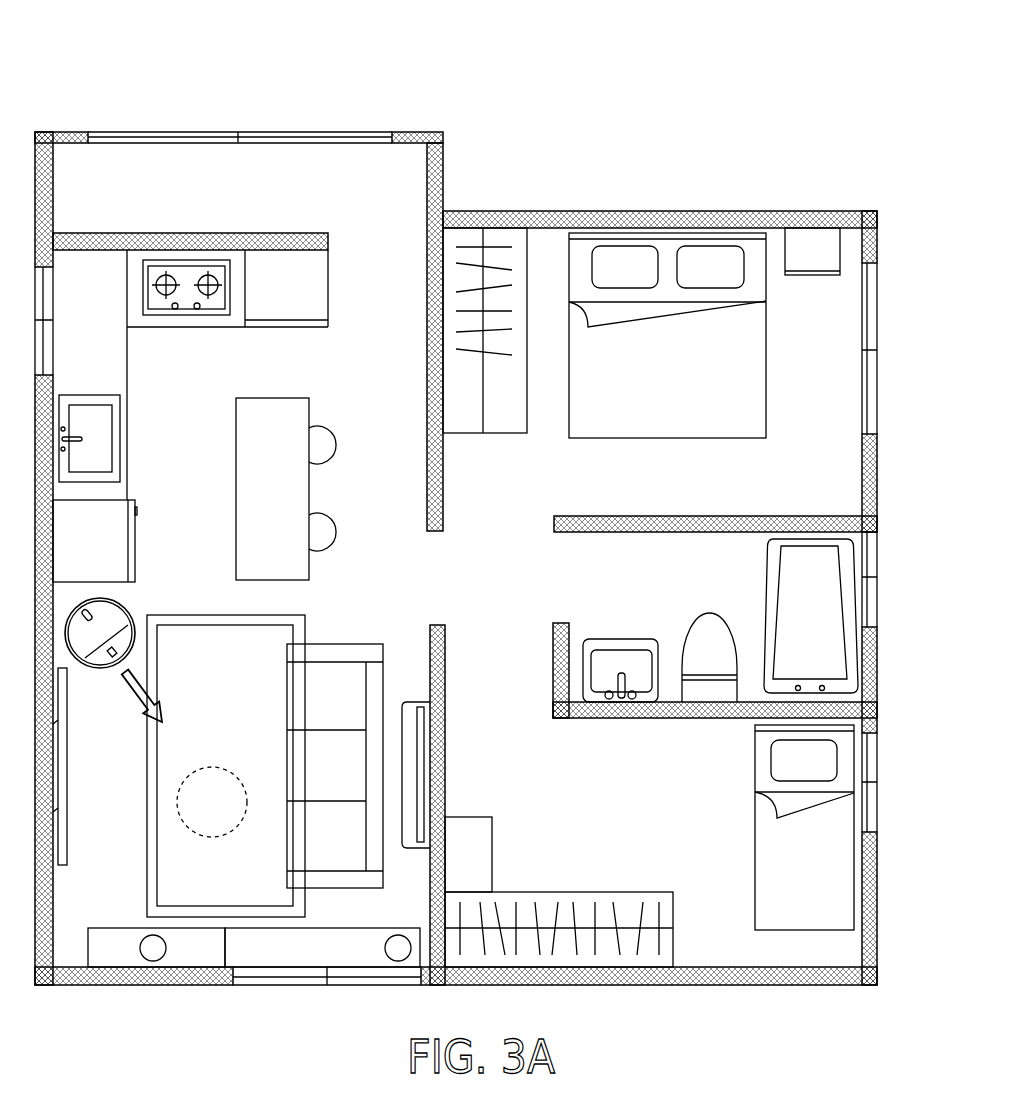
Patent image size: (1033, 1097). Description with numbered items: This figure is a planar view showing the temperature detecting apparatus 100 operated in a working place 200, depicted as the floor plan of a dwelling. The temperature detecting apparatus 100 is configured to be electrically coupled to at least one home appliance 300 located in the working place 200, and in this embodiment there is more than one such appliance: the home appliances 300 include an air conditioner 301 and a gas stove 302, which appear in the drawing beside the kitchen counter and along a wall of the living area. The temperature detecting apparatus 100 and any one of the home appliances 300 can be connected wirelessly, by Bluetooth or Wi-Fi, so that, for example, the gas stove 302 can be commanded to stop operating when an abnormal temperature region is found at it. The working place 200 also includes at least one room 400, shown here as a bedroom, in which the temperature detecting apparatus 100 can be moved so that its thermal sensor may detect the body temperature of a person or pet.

The temperature detecting apparatus 100 is at (129, 608).
The working place 200 is at (821, 212).
The home appliance 300 is at (100, 2).
The air conditioner 301 is at (409, 754).
The gas stove 302 is at (188, 294).
The room 400 is at (818, 419).